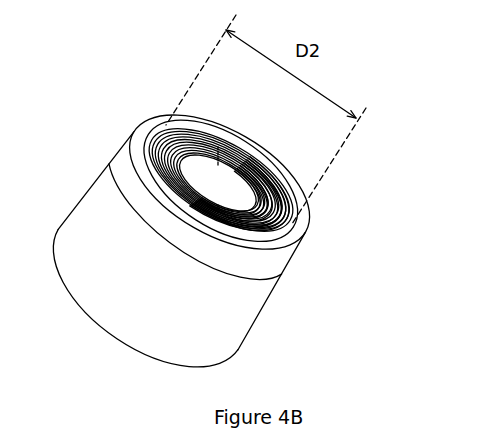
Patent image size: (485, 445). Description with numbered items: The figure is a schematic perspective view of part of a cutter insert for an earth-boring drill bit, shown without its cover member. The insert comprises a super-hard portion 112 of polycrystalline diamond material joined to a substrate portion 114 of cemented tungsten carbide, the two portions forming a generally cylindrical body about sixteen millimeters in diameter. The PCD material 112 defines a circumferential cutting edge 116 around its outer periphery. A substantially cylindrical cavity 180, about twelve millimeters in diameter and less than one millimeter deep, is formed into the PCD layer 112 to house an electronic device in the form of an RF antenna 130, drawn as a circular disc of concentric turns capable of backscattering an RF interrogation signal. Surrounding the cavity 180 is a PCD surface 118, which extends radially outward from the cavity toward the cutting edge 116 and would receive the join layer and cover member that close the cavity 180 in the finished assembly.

The super-hard portion 112 is at (282, 262).
The substrate portion 114 is at (243, 339).
The circumferential cutting edge 116 is at (153, 117).
The PCD surface 118 is at (143, 142).
The RF antenna 130 is at (272, 193).
The cavity 180 is at (210, 182).